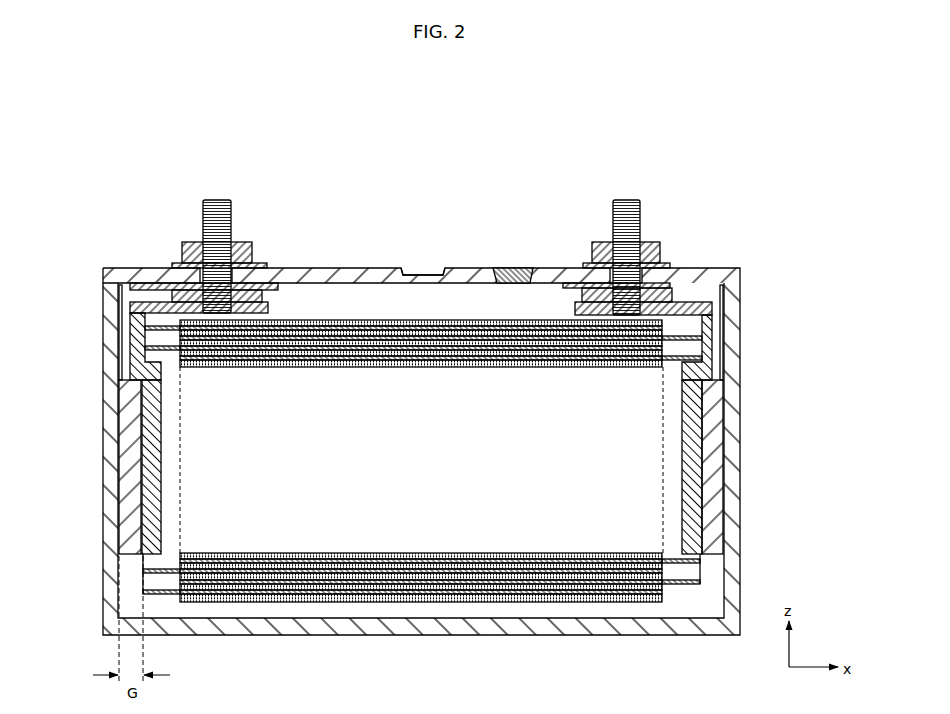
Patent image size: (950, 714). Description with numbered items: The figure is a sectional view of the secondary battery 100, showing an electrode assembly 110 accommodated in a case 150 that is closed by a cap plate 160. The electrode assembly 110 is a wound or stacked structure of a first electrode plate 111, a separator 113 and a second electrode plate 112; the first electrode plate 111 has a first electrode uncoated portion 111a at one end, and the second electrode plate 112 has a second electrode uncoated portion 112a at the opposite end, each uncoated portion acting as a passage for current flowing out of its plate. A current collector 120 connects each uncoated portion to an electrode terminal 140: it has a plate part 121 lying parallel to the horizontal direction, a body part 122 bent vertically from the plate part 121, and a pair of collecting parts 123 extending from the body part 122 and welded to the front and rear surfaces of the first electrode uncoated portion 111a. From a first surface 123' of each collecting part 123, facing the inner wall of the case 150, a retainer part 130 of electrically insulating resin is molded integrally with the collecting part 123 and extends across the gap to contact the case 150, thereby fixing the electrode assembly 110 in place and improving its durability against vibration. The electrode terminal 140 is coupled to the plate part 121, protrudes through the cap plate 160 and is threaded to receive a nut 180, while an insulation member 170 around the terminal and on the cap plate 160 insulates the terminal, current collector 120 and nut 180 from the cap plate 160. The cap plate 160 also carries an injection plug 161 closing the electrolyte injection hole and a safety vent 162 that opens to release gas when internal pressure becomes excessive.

The secondary battery 100 is at (774, 170).
The electrode assembly 110 is at (429, 502).
The first electrode plate 111 is at (282, 603).
The first electrode uncoated portion 111a is at (160, 595).
The second electrode plate 112 is at (604, 603).
The second electrode uncoated portion 112a is at (683, 562).
The separator 113 is at (388, 560).
The current collector 120 is at (155, 418).
The plate part 121 is at (130, 291).
The body part 122 is at (135, 357).
The collecting part 123 is at (98, 467).
The first surface 123' is at (96, 537).
The retainer part 130 is at (130, 503).
The electrode terminal 140 is at (217, 200).
The case 150 is at (740, 460).
The cap plate 160 is at (740, 275).
The injection plug 161 is at (512, 266).
The safety vent 162 is at (418, 275).
The insulation member 170 is at (668, 264).
The nut 180 is at (647, 240).